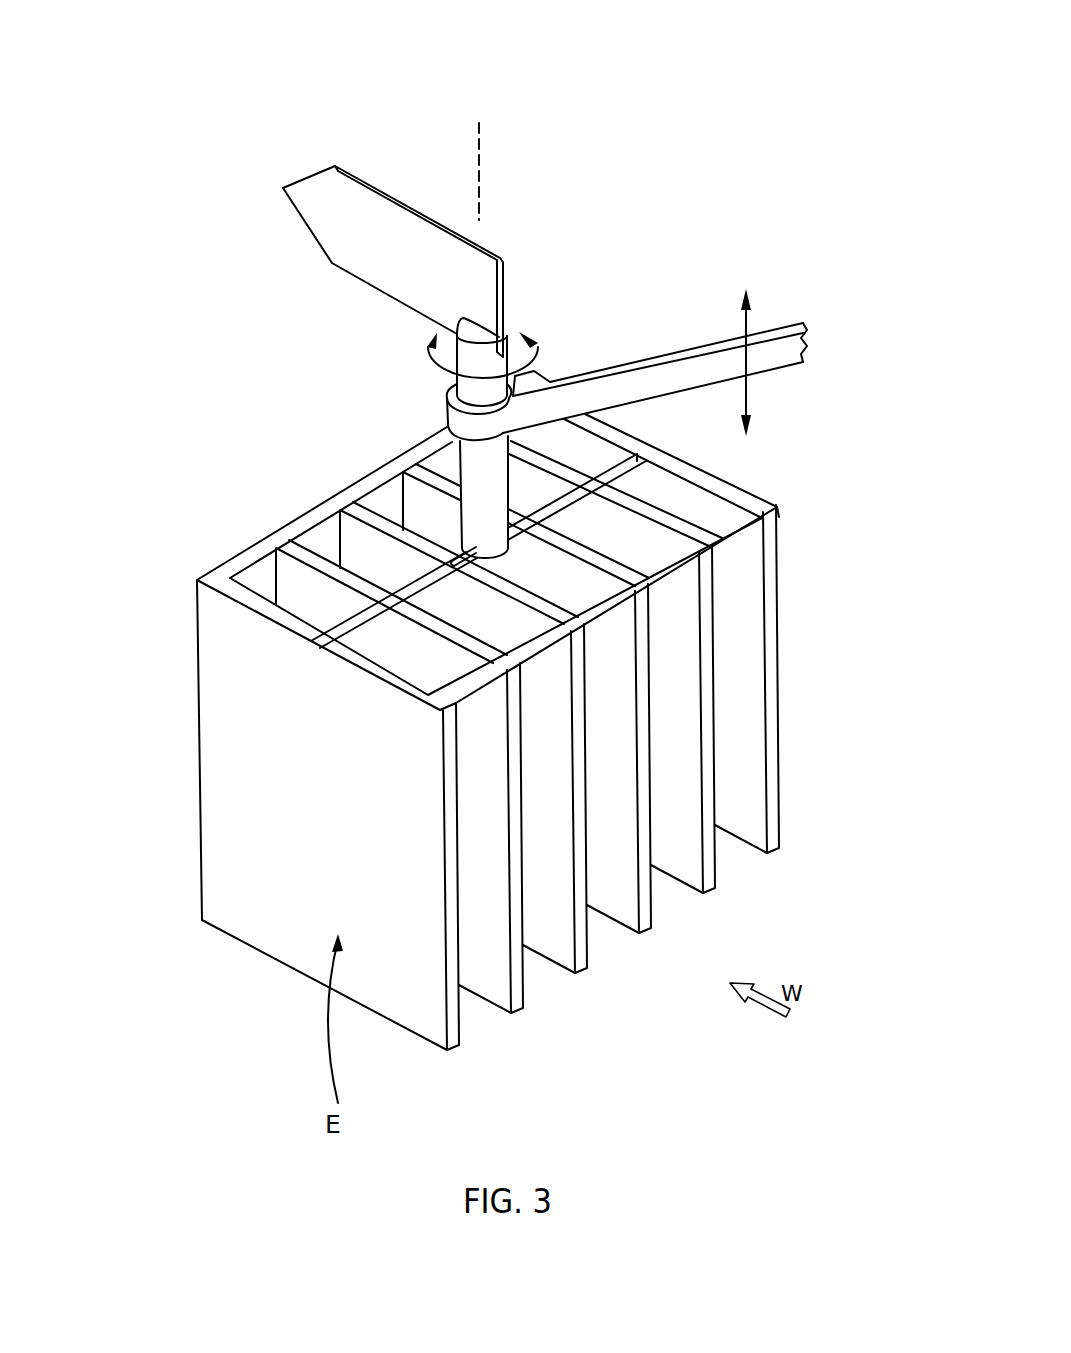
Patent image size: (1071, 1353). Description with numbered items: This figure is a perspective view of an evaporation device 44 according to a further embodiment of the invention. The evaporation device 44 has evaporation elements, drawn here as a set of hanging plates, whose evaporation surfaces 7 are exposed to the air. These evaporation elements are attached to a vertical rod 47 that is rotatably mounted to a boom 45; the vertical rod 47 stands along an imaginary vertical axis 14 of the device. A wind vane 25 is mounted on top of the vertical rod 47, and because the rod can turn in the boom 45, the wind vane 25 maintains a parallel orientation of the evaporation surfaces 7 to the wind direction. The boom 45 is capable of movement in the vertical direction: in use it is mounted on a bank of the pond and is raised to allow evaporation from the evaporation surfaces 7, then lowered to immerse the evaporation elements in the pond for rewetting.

The evaporation surfaces 7 is at (222, 815).
The imaginary vertical axis 14 is at (480, 182).
The wind vane 25 is at (400, 237).
The evaporation device 44 is at (180, 645).
The boom 45 is at (700, 370).
The vertical rod 47 is at (475, 482).